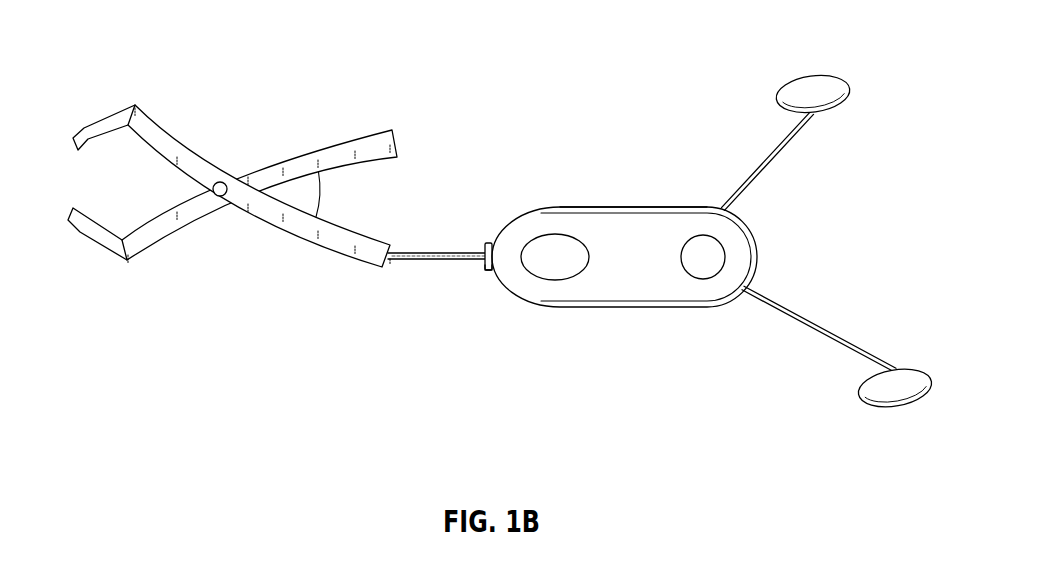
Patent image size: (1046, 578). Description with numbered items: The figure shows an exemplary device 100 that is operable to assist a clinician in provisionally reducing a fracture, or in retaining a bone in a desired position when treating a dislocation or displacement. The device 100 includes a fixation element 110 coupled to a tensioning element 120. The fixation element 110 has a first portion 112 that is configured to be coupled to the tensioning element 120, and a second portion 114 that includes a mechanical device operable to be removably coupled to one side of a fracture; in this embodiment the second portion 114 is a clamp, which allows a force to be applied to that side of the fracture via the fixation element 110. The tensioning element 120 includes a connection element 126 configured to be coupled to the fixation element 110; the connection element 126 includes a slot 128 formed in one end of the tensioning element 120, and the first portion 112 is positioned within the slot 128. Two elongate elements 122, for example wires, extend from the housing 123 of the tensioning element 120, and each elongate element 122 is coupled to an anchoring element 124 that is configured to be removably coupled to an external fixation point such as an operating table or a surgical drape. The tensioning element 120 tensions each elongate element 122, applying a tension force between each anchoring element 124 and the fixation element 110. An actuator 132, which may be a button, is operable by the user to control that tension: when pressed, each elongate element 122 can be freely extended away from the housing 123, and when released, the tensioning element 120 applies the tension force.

The device 100 is at (563, 308).
The fixation element 110 is at (167, 226).
The first portion 112 is at (462, 253).
The second portion 114 is at (105, 125).
The tensioning element 120 is at (633, 293).
The elongate element 122 is at (777, 157).
The housing 123 is at (635, 205).
The anchoring element 124 is at (778, 83).
The connection element 126 is at (488, 243).
The slot 128 is at (487, 273).
The actuator 132 is at (553, 234).